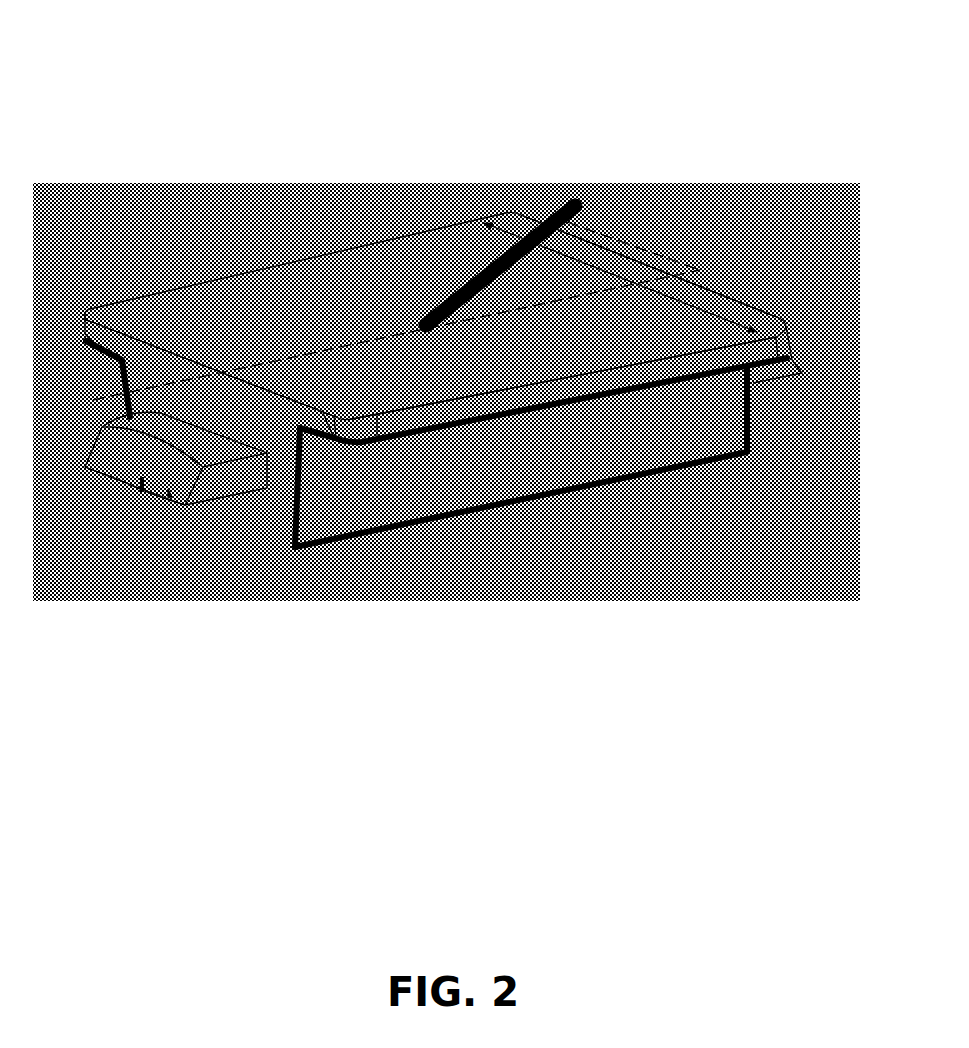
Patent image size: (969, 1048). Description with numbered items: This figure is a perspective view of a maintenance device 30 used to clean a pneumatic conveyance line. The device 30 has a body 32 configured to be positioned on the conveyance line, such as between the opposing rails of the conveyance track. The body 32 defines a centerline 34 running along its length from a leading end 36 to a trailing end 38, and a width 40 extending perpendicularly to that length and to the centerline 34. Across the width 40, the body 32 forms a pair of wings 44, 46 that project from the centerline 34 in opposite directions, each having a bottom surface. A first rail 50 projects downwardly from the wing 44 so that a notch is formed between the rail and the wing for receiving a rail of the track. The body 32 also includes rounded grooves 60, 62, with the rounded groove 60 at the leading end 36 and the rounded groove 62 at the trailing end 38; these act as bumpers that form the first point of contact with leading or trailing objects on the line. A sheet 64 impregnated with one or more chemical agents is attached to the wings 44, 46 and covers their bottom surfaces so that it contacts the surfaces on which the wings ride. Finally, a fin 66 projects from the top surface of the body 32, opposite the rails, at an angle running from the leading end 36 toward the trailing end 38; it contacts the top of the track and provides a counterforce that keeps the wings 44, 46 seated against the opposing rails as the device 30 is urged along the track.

The maintenance device 30 is at (684, 106).
The body 32 is at (357, 271).
The centerline 34 is at (694, 268).
The leading end 36 is at (178, 350).
The trailing end 38 is at (758, 306).
The width 40 is at (510, 233).
The wing 44 is at (565, 348).
The wing 46 is at (425, 278).
The first rail 50 is at (280, 507).
The rounded groove 60 is at (135, 458).
The rounded groove 62 is at (793, 355).
The sheet 64 is at (105, 347).
The fin 66 is at (575, 200).